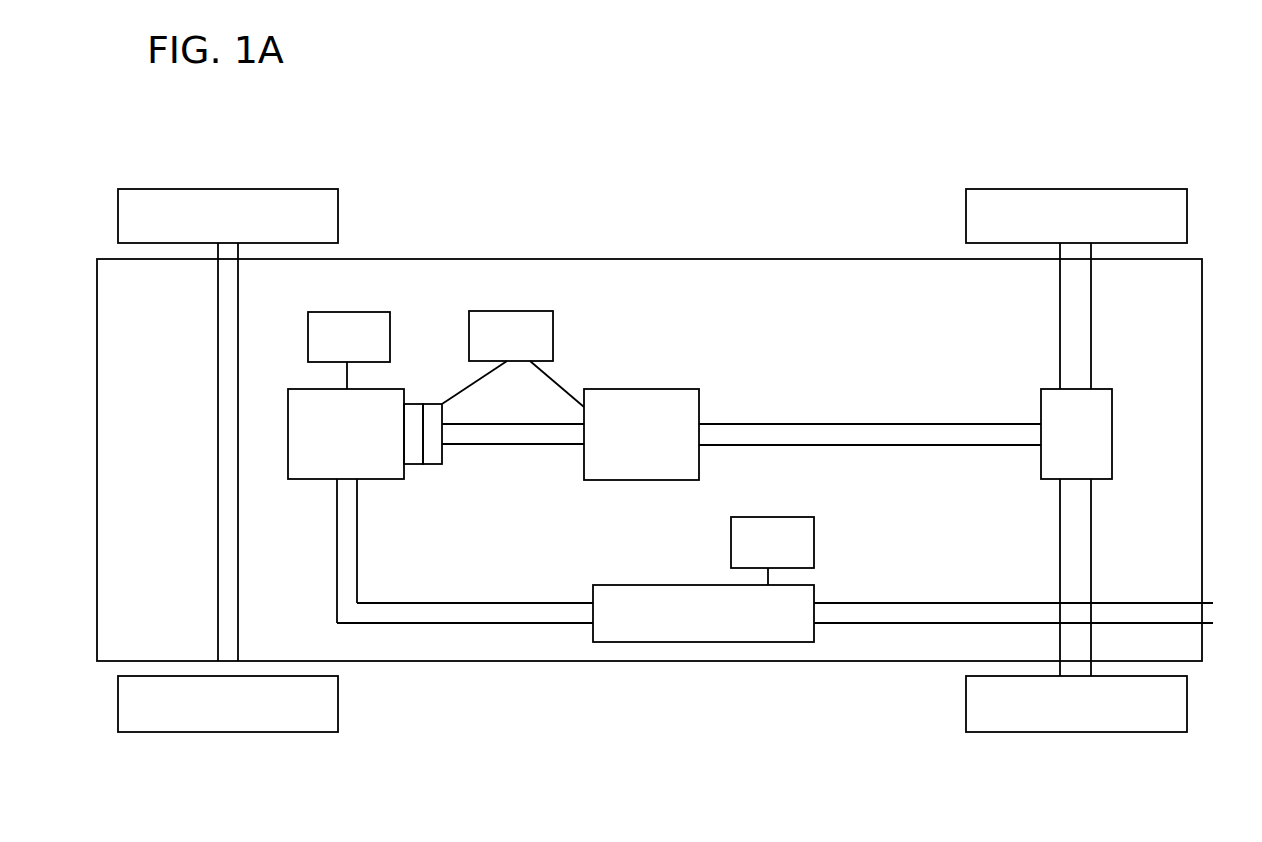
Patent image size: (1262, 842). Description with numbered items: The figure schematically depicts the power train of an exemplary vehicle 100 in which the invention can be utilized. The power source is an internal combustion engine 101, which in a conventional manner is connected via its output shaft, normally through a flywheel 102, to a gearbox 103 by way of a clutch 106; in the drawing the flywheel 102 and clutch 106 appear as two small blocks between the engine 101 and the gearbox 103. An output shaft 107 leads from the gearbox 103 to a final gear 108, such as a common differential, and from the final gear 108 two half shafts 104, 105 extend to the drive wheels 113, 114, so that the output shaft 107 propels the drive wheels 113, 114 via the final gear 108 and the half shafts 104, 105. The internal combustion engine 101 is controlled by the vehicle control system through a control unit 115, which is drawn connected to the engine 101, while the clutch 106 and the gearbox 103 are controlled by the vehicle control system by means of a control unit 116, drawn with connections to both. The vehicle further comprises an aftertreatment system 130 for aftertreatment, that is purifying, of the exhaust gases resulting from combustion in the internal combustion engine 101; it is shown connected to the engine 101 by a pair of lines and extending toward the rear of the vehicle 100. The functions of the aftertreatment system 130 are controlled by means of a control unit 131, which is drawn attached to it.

The vehicle 100 is at (558, 102).
The internal combustion engine 101 is at (318, 470).
The flywheel 102 is at (420, 468).
The gearbox 103 is at (645, 400).
The half shaft 104 is at (1082, 314).
The half shaft 105 is at (1085, 585).
The clutch 106 is at (432, 468).
The output shaft 107 is at (960, 441).
The final gear 108 is at (1105, 429).
The drive wheel 113 is at (1182, 209).
The drive wheel 114 is at (1182, 705).
The control unit 115 is at (358, 344).
The control unit 116 is at (533, 348).
The aftertreatment system 130 is at (690, 597).
The control unit 131 is at (770, 551).